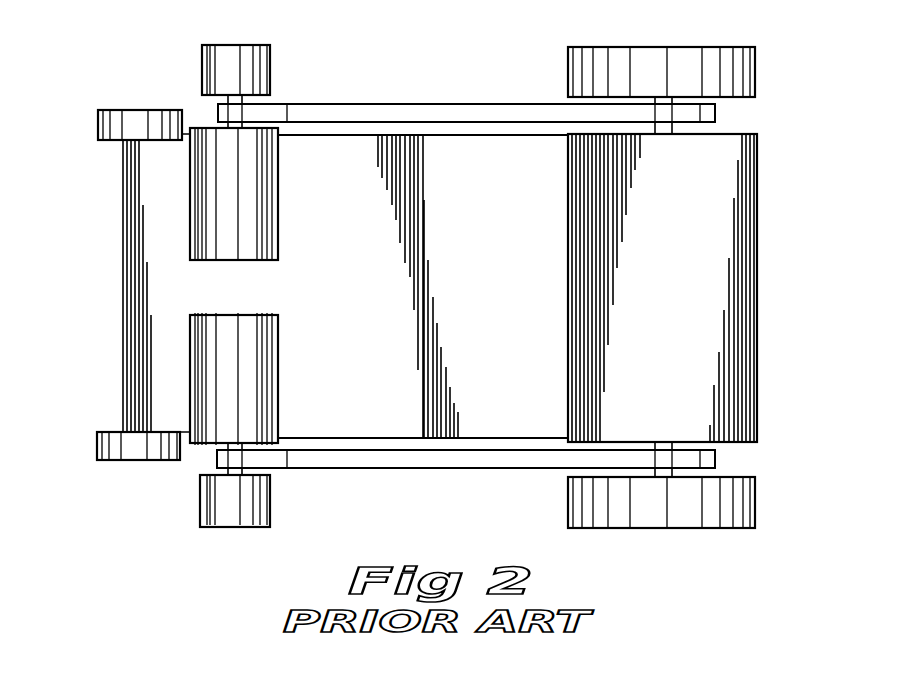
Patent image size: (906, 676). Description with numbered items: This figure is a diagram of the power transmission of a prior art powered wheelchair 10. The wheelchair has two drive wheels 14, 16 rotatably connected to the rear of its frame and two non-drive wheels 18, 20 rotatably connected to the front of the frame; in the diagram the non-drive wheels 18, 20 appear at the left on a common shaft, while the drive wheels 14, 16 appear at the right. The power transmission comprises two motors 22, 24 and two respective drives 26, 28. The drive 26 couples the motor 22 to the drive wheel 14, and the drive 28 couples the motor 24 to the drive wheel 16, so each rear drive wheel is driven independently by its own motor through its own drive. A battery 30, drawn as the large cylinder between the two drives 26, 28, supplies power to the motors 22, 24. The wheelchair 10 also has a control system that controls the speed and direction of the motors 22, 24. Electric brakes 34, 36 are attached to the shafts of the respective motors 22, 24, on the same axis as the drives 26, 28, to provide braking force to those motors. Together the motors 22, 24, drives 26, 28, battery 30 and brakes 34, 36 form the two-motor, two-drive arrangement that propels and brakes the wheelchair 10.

The powered wheelchair 10 is at (108, 328).
The drive wheel 14 is at (681, 62).
The drive wheel 16 is at (681, 513).
The non-drive wheel 18 is at (134, 122).
The non-drive wheel 20 is at (148, 455).
The motor 22 is at (268, 207).
The motor 24 is at (270, 378).
The drive 26 is at (452, 100).
The drive 28 is at (452, 478).
The battery 30 is at (722, 236).
The electric brake 34 is at (225, 57).
The electric brake 36 is at (220, 513).